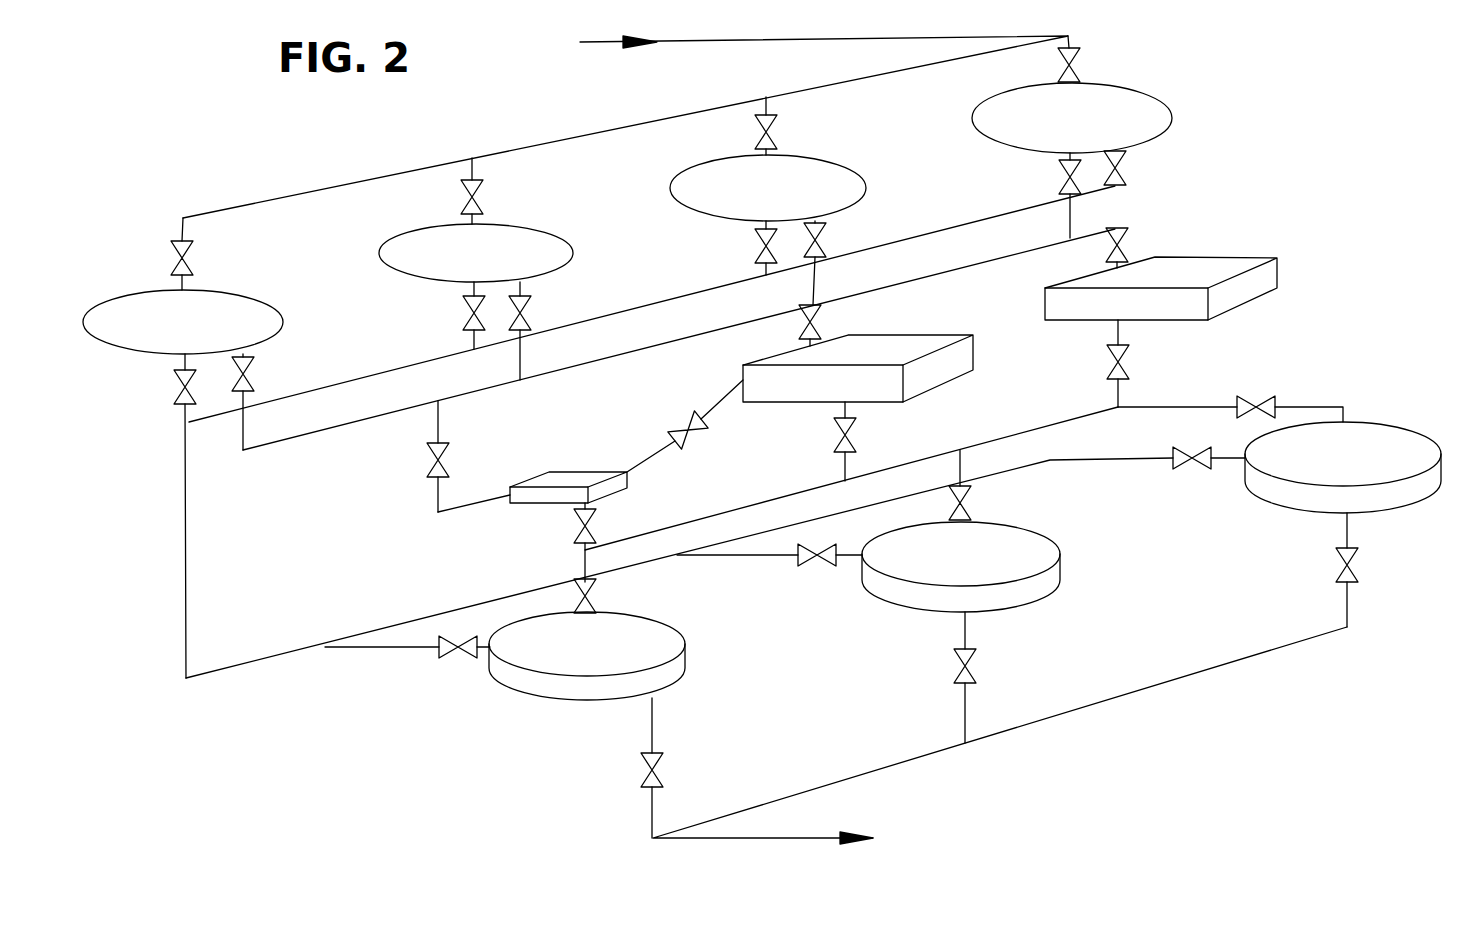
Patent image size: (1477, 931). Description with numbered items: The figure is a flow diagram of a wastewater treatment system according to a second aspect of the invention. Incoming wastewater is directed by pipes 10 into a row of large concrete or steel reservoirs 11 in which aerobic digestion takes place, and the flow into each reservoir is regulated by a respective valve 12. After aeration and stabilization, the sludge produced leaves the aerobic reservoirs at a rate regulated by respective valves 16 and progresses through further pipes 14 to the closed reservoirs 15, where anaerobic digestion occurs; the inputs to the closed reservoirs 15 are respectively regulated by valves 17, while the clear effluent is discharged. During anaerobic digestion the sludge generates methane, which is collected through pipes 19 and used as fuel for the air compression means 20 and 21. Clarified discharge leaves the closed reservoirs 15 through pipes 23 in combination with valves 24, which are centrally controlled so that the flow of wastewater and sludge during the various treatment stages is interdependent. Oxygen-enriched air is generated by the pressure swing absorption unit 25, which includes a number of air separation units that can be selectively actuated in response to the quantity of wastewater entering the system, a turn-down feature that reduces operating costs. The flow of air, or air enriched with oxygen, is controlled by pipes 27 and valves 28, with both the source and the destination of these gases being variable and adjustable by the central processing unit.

The pipes 10 is at (700, 44).
The reservoirs 11 is at (400, 258).
The valve 12 is at (457, 197).
The pipes 14 is at (189, 547).
The closed reservoirs 15 is at (590, 693).
The valves 16 is at (248, 375).
The valves 17 is at (458, 656).
The pipes 19 is at (997, 437).
The air compression means 20 is at (1213, 277).
The air compression means 21 is at (895, 352).
The pipes 23 is at (803, 828).
The valves 24 is at (950, 667).
The unit 25 is at (573, 470).
The pipes 27 is at (693, 338).
The valves 28 is at (433, 462).